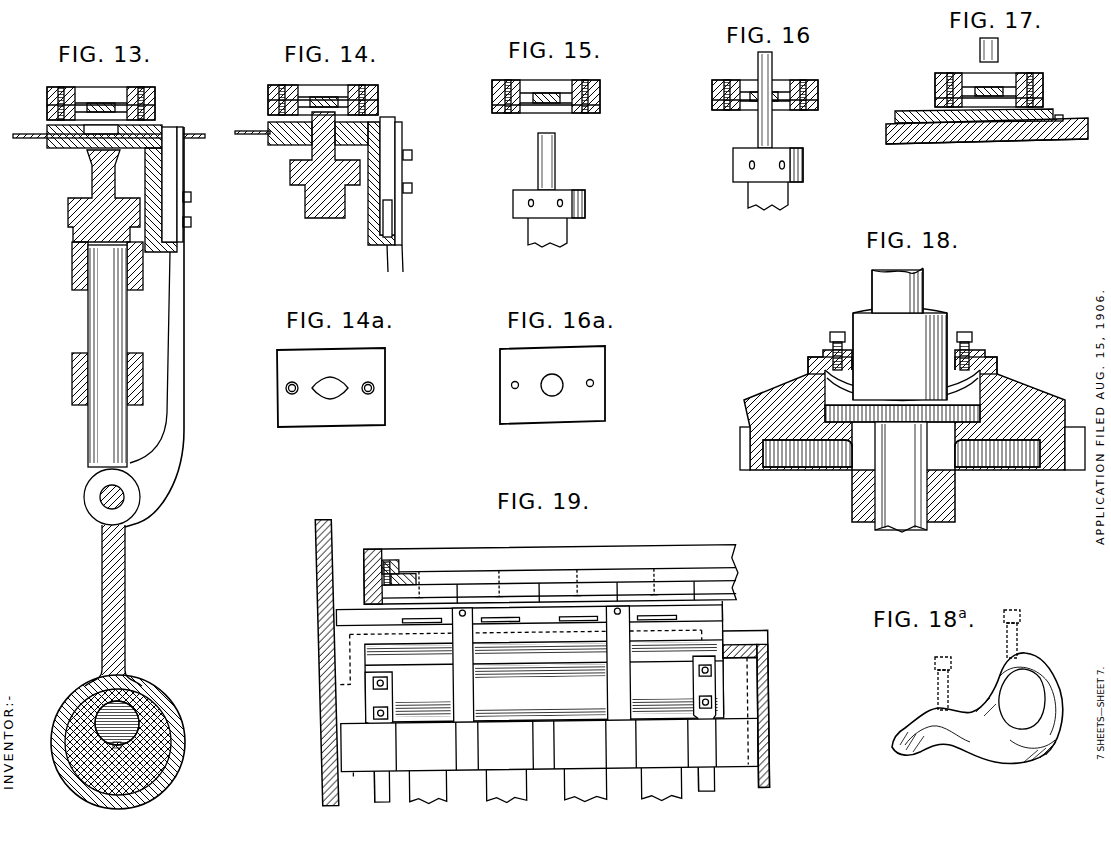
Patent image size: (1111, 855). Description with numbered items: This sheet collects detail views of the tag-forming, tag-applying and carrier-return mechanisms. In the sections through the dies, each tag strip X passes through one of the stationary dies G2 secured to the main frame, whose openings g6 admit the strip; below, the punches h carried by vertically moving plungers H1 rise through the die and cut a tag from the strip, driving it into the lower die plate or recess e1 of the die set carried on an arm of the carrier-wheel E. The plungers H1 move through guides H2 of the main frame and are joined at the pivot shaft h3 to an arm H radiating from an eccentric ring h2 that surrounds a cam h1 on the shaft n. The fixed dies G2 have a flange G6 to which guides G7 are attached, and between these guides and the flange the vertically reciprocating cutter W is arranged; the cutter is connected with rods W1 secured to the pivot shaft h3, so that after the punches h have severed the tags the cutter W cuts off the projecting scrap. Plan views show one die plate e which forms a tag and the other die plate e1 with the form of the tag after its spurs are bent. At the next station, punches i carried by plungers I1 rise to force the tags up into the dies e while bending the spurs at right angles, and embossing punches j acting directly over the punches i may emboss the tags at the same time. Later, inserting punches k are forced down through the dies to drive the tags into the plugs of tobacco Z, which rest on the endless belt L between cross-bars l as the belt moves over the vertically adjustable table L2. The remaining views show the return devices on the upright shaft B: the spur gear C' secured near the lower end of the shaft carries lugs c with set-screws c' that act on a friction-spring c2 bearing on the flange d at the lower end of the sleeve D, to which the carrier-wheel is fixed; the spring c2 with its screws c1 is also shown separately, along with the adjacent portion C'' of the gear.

In FIG. 13, the die e is at (47, 104).
In FIG. 14, the die e is at (268, 101).
In FIG. 14a, the die e is at (331, 387).
In FIG. 15, the die e is at (492, 100).
In FIG. 16, the die e is at (712, 96).
In FIG. 17, the die e is at (935, 90).
In FIG. 13, the lower die plate e1 is at (47, 114).
In FIG. 14, the lower die plate e1 is at (268, 113).
In FIG. 16a, the lower die plate e1 is at (552, 385).
In FIG. 15, the lower die plate e1 is at (492, 111).
In FIG. 16, the lower die plate e1 is at (712, 108).
In FIG. 17, the lower die plate e1 is at (935, 101).
In FIG. 13, the stationary dies G2 is at (55, 147).
In FIG. 14, the stationary dies G2 is at (268, 141).
In FIG. 19, the stationary dies G2 is at (715, 625).
In FIG. 13, the tag strip X is at (16, 138).
In FIG. 14, the tag strip X is at (233, 130).
In FIG. 13, the punches h is at (92, 173).
In FIG. 14, the punches h is at (312, 156).
In FIG. 13, the flange G6 is at (160, 172).
In FIG. 14, the flange G6 is at (370, 228).
In FIG. 13, the cutter W is at (170, 173).
In FIG. 14, the cutter W is at (390, 171).
In FIG. 19, the cutter W is at (544, 681).
In FIG. 13, the guides G7 is at (186, 212).
In FIG. 14, the guides G7 is at (392, 212).
In FIG. 19, the guides G7 is at (457, 687).
In FIG. 13, the guides H2 is at (72, 266).
In FIG. 19, the guides H2 is at (737, 733).
In FIG. 13, the plungers H1 is at (100, 317).
In FIG. 19, the plungers H1 is at (505, 792).
In FIG. 13, the rods W1 is at (180, 331).
In FIG. 14, the rods W1 is at (395, 258).
In FIG. 19, the rods W1 is at (703, 756).
In FIG. 13, the pivot shaft h3 is at (100, 497).
In FIG. 13, the arm H is at (126, 626).
In FIG. 13, the shaft n is at (100, 707).
In FIG. 13, the eccentric ring h2 is at (123, 742).
In FIG. 14, the eccentric ring h2 is at (402, 134).
In FIG. 13, the cam h1 is at (157, 760).
In FIG. 15, the punches i is at (538, 147).
In FIG. 16, the punches i is at (765, 128).
In FIG. 15, the plungers I1 is at (567, 232).
In FIG. 16, the embossing punches j is at (773, 65).
In FIG. 17, the inserting punches k is at (980, 48).
In FIG. 17, the plugs of tobacco Z is at (900, 112).
In FIG. 17, the endless belt L is at (887, 121).
In FIG. 17, the cross-bars l is at (1058, 112).
In FIG. 17, the table L2 is at (962, 144).
In FIG. 18, the sleeve D is at (935, 315).
In FIG. 18, the set-screws c' is at (900, 340).
In FIG. 18, the lugs c is at (901, 351).
In FIG. 18, the spur gear C' is at (912, 436).
In FIG. 18, the friction-spring c2 is at (972, 382).
In FIG. 18a, the friction-spring c2 is at (1050, 712).
In FIG. 18, the upright shaft B is at (901, 477).
In FIG. 18, the arm recess C'' is at (901, 476).
In FIG. 18, the flange d is at (965, 422).
In FIG. 18a, the set-screws c1 is at (936, 683).
In FIG. 19, the carrier-wheel E is at (409, 558).
In FIG. 19, the openings g6 is at (428, 617).